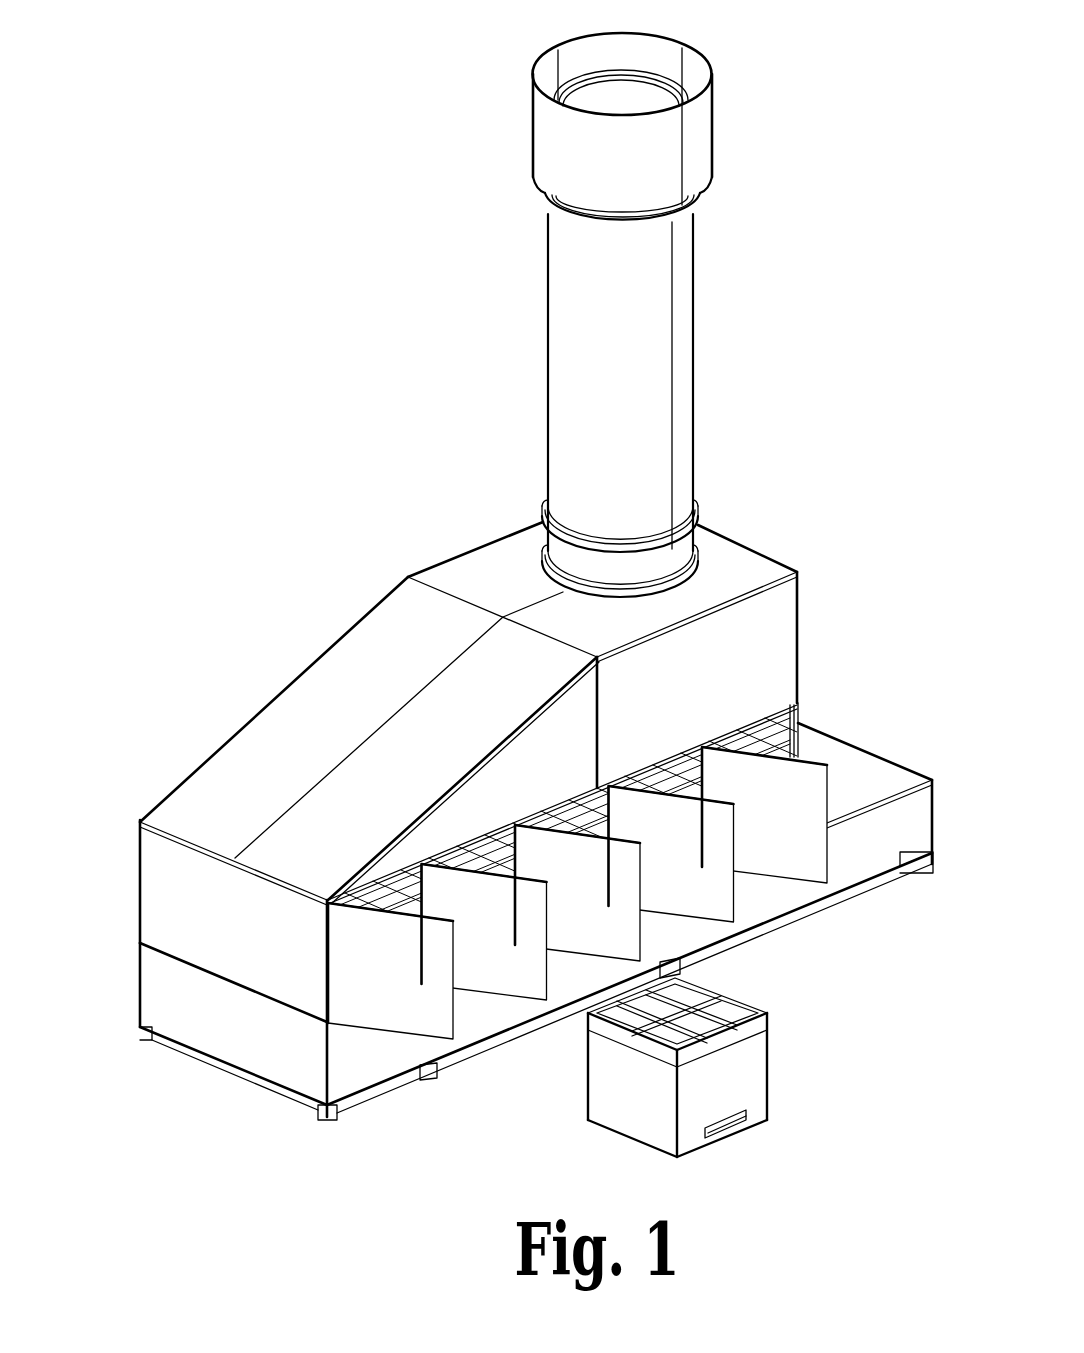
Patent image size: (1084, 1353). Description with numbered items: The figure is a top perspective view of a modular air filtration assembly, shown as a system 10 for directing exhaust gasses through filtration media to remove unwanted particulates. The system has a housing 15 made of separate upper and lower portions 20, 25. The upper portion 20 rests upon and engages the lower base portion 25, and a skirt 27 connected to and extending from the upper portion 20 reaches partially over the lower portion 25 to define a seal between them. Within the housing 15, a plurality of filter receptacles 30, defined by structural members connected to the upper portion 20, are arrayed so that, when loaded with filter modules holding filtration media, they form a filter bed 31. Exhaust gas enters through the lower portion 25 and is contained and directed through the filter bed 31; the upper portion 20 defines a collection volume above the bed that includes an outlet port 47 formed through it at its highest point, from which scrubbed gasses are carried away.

The system 10 is at (498, 596).
The housing 15 is at (498, 574).
The upper portion 20 is at (155, 864).
The lower portion 25 is at (506, 912).
The skirt 27 is at (303, 995).
The filter receptacle 30 is at (737, 1075).
The filter bed 31 is at (684, 779).
The outlet port 47 is at (648, 90).